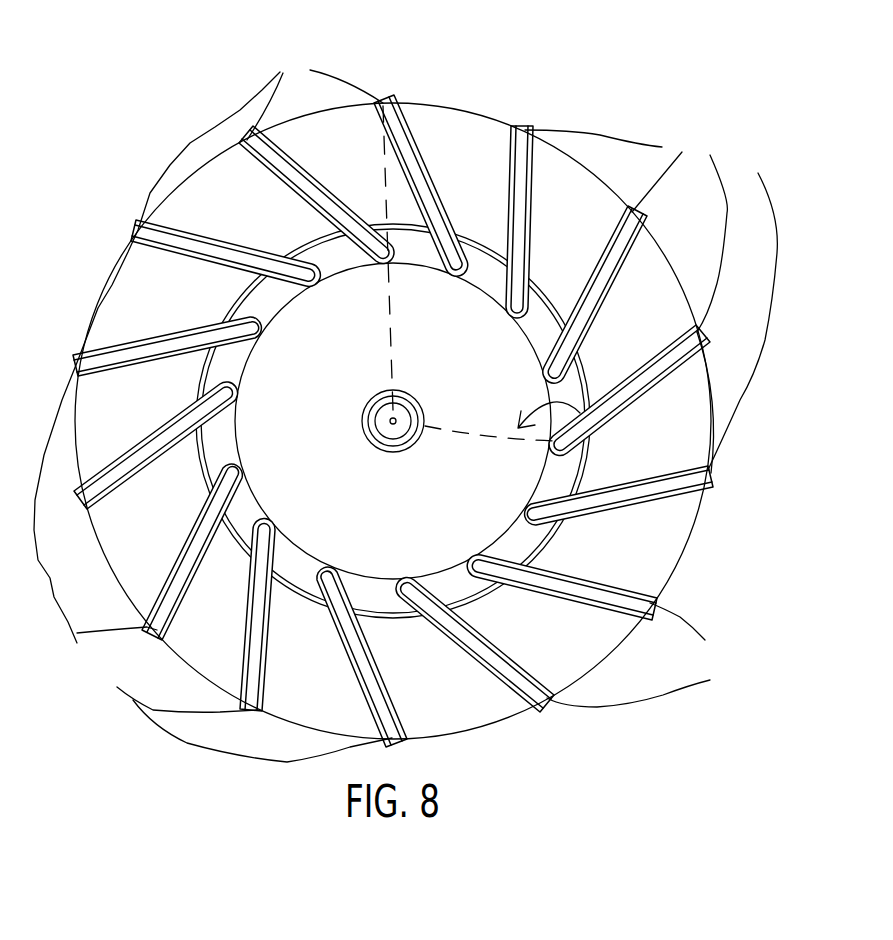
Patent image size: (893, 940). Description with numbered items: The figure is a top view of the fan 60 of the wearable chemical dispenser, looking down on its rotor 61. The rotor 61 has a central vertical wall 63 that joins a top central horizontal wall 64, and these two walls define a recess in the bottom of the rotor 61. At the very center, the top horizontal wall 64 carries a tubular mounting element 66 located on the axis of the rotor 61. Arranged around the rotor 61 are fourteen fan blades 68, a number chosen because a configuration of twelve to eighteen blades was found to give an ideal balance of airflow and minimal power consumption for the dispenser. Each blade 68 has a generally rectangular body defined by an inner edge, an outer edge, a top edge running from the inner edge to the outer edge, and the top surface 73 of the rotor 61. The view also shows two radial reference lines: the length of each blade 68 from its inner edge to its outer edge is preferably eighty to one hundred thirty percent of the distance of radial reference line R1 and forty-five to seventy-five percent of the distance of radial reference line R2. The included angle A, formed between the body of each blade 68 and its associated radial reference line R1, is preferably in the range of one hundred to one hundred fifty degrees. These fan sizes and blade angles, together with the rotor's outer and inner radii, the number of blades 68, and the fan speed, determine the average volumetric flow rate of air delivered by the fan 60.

The fan 60 is at (567, 64).
The rotor 61 is at (433, 127).
The central vertical wall 63 is at (307, 248).
The top central horizontal wall 64 is at (322, 419).
The tubular mounting element 66 is at (402, 414).
The fan blades 68 is at (405, 393).
The top surface 73 is at (672, 444).
The radial reference line R1 is at (493, 453).
The radial reference line R2 is at (408, 258).
The included angle A is at (549, 405).